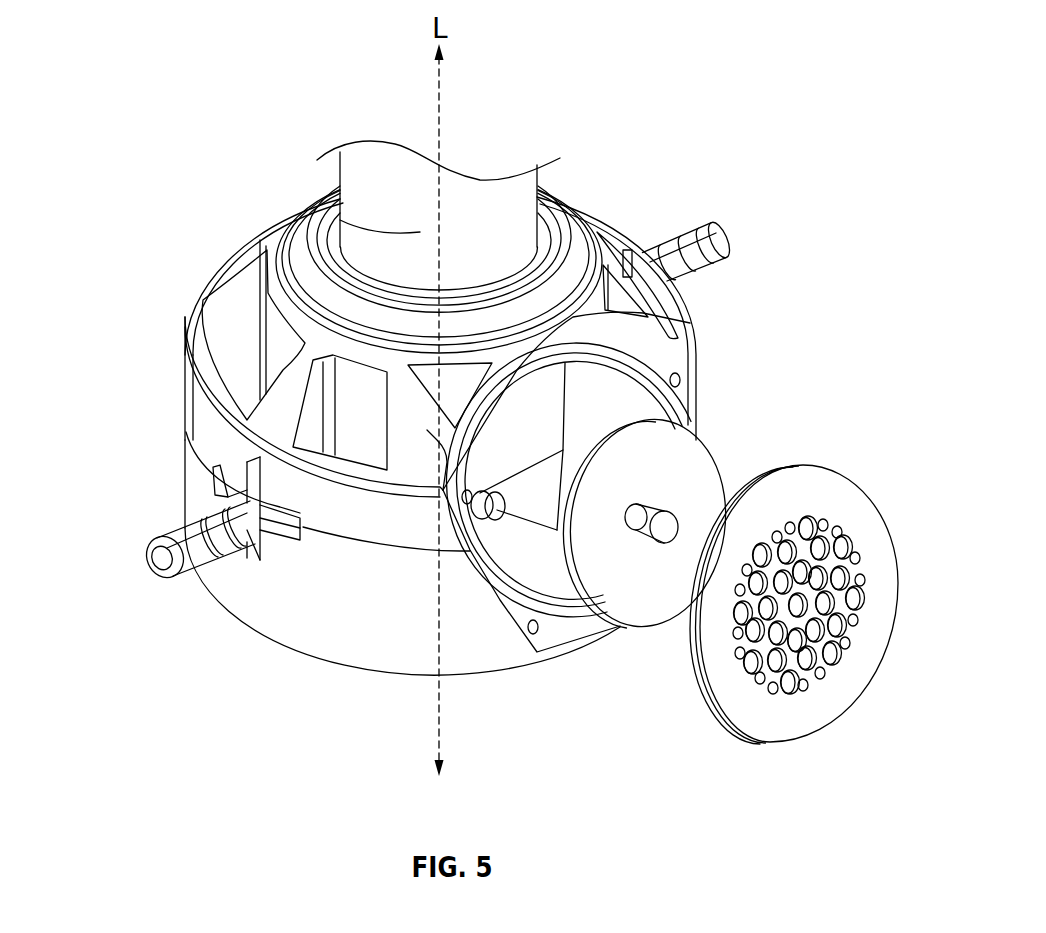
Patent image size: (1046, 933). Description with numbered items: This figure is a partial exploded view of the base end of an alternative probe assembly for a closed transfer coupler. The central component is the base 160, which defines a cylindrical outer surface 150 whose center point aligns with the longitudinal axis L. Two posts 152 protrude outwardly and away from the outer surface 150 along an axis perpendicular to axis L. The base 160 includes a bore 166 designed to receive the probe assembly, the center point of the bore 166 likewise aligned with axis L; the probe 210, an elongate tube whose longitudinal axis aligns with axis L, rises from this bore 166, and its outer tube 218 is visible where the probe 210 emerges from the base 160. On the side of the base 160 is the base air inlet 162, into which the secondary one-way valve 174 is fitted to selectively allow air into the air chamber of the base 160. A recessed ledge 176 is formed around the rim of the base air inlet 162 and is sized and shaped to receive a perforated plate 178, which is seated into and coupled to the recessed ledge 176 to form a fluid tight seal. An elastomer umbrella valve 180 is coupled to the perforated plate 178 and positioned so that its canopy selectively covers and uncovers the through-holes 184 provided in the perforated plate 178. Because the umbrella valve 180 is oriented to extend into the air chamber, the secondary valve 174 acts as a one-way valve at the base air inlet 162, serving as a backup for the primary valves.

The cylindrical outer surface 150 is at (325, 606).
The posts 152 is at (717, 225).
The base 160 is at (140, 238).
The base air inlet 162 is at (612, 386).
The bore 166 is at (578, 232).
The secondary one-way valve 174 is at (770, 430).
The recessed ledge 176 is at (528, 605).
The perforated plate 178 is at (862, 513).
The umbrella valve 180 is at (620, 593).
The through-holes 184 is at (837, 627).
The probe 210 is at (340, 210).
The outer tube 218 is at (337, 184).